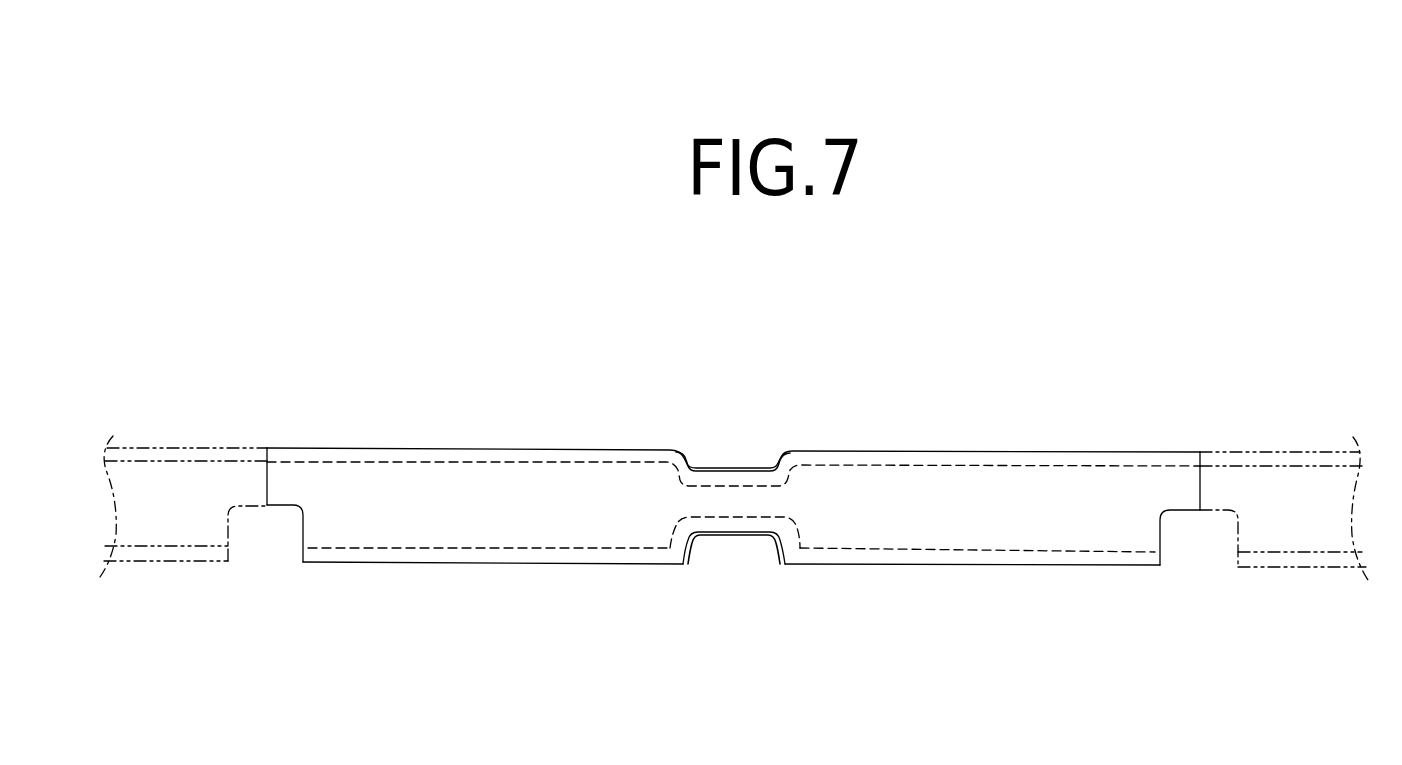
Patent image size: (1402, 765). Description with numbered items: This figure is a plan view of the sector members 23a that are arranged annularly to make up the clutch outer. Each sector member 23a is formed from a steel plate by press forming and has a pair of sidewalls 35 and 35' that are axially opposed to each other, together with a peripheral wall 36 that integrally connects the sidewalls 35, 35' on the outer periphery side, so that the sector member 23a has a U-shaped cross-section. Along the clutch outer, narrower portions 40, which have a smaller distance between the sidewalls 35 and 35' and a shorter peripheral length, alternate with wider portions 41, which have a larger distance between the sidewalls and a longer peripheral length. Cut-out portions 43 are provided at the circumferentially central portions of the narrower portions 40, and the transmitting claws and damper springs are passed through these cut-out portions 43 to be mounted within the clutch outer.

The sector member 23a is at (188, 448).
The sidewall 35 is at (733, 416).
The sidewall 35' is at (731, 610).
The peripheral wall 36 is at (470, 522).
The narrower portion 40 is at (735, 497).
The wider portion 41 is at (898, 503).
The cut-out portion 43 is at (300, 528).